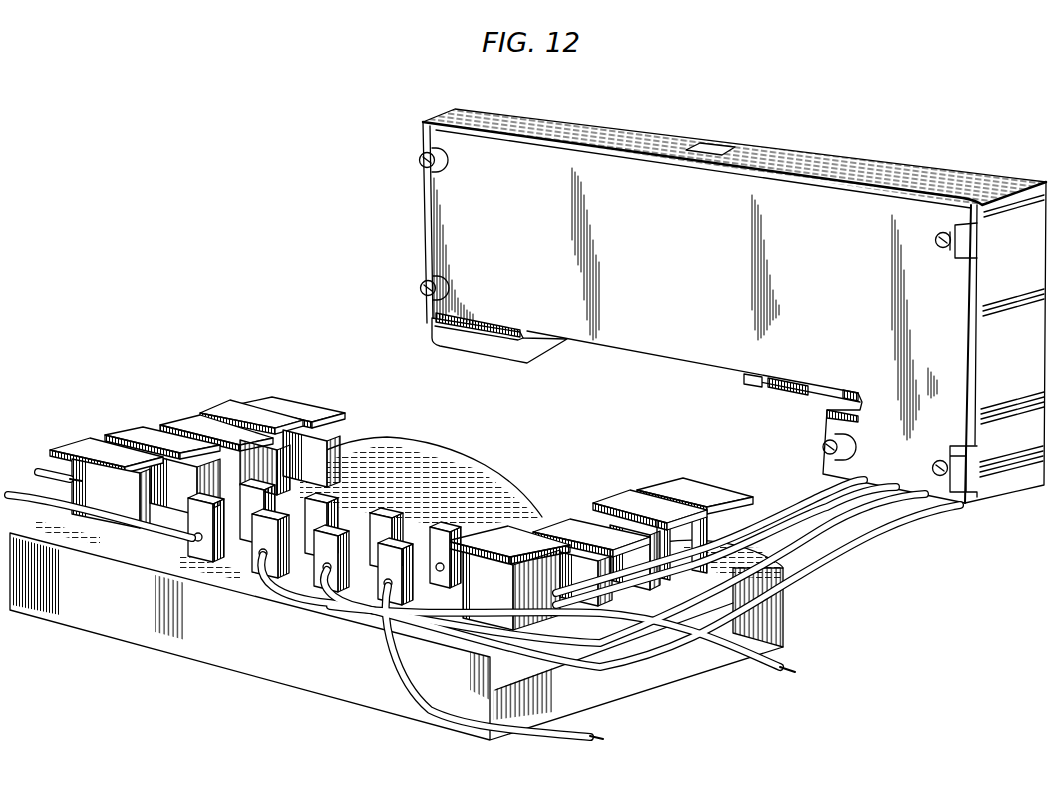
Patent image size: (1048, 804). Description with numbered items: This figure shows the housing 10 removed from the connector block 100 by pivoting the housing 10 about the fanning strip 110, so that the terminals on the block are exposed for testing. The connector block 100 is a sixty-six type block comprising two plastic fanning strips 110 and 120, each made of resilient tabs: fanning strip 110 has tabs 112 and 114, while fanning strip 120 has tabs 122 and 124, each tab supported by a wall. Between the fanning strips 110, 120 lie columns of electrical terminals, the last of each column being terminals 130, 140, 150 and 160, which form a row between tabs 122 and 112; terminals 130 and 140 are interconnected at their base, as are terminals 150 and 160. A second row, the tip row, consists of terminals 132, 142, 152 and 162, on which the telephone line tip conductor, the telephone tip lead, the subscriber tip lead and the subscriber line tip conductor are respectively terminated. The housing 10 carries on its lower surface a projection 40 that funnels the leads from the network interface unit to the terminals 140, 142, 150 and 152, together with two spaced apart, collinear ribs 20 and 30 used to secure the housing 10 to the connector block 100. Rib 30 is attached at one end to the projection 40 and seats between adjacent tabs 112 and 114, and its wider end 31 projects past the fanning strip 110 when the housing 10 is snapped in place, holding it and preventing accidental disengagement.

The housing 10 is at (634, 130).
The rib 20 is at (432, 330).
The rib 30 is at (790, 388).
The end of rib 31 is at (745, 378).
The projection 40 is at (910, 468).
The connector block 100 is at (92, 620).
The fanning strip 110 is at (662, 483).
The tab 112 is at (548, 526).
The tab 114 is at (568, 530).
The fanning strip 120 is at (278, 398).
The tab 122 is at (77, 447).
The tab 124 is at (135, 433).
The terminal 130 is at (203, 562).
The terminal 132 is at (292, 470).
The terminal 140 is at (258, 578).
The terminal 142 is at (353, 490).
The terminal 150 is at (313, 592).
The terminal 152 is at (413, 512).
The terminal 160 is at (388, 604).
The terminal 162 is at (452, 530).